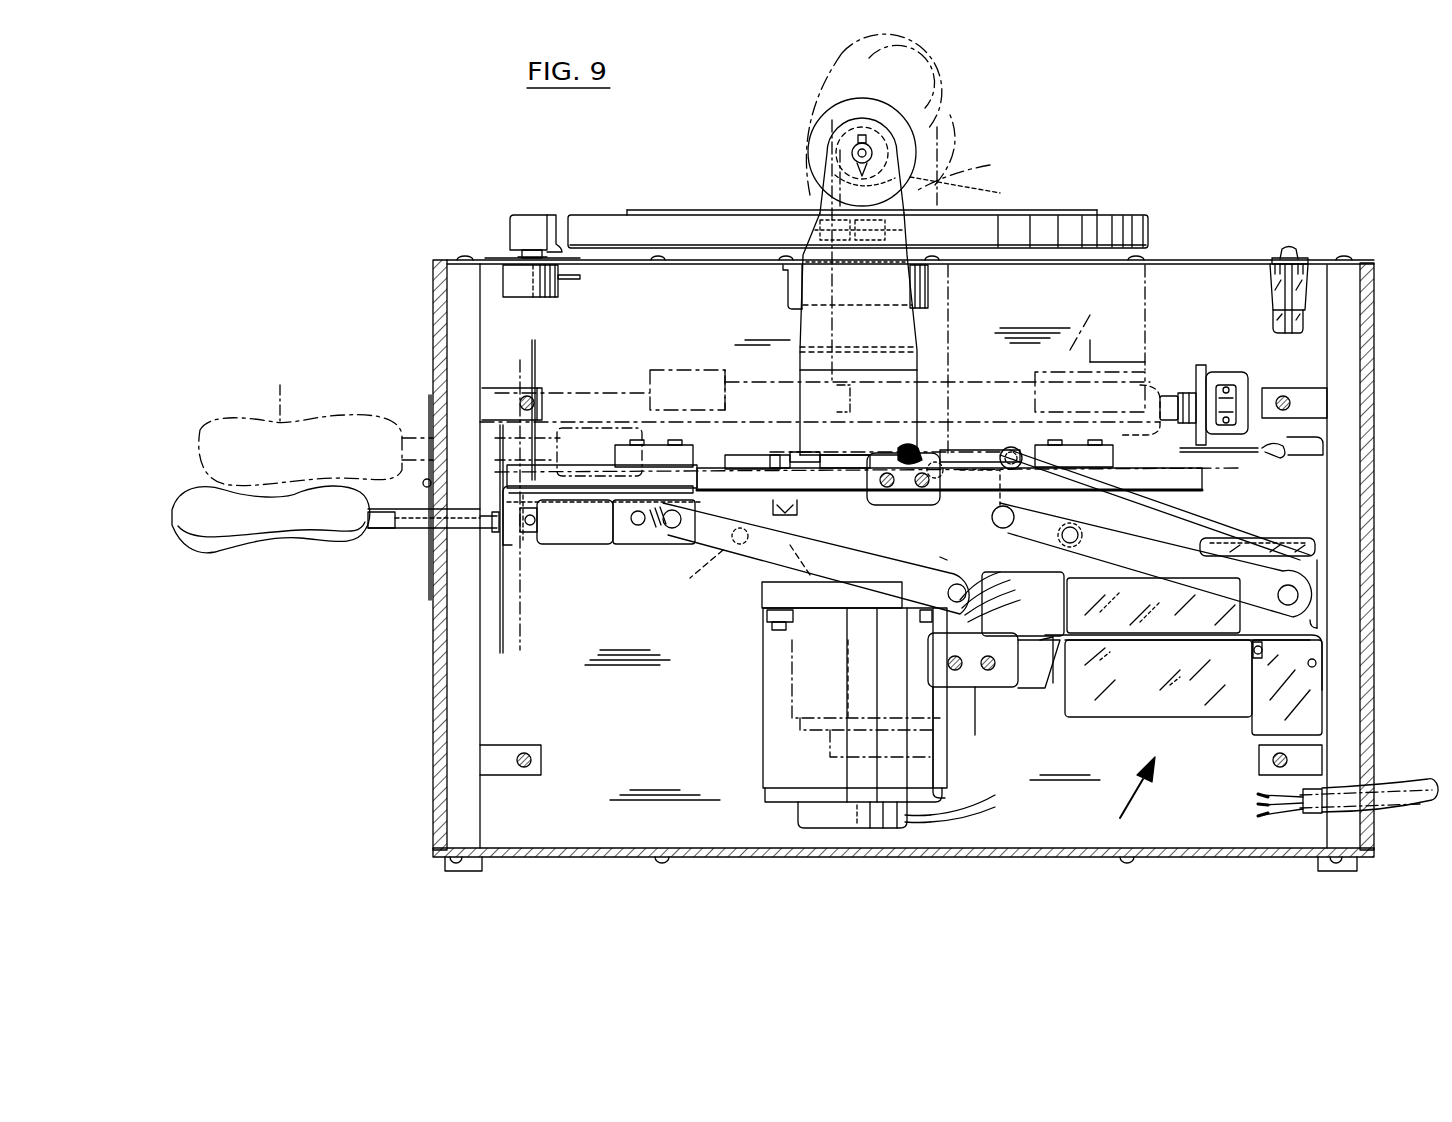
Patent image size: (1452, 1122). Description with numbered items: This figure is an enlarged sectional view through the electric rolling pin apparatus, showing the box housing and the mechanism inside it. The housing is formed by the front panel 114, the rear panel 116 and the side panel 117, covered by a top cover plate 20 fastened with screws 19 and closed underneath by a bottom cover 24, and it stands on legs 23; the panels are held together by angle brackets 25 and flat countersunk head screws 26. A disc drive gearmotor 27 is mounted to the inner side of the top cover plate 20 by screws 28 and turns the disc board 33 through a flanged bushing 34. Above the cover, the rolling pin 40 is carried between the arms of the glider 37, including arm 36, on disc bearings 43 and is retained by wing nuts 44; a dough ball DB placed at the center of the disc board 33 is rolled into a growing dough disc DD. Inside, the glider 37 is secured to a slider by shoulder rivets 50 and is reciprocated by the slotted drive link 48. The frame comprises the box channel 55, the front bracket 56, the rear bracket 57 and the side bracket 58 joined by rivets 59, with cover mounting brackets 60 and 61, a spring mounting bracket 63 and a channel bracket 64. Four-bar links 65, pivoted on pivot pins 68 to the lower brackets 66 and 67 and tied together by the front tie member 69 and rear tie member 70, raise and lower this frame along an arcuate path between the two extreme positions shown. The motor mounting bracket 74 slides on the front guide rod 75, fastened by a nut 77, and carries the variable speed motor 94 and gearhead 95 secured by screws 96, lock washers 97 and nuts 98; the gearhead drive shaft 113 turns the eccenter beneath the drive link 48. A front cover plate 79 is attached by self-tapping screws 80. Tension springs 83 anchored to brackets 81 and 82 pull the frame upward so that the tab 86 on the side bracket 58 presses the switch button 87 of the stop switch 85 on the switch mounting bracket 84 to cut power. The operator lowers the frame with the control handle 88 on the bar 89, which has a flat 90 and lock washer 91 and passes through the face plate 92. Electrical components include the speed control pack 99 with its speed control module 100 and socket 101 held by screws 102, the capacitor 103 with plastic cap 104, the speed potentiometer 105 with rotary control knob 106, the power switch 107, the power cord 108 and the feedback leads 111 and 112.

The screws 19 is at (464, 259).
The top cover plate 20 is at (1185, 261).
The legs 23 is at (445, 865).
The bottom cover 24 is at (1195, 850).
The angle brackets 25 is at (500, 395).
The flat countersunk head screws 26 is at (830, 245).
The disc drive gearmotor 27 is at (786, 300).
The screws 28 is at (780, 265).
The disc board 33 is at (1150, 230).
The flanged bushing 34 is at (969, 189).
The arm of glider 36 is at (855, 122).
The glider 37 is at (770, 458).
The rolling pin 40 is at (928, 122).
The disc bearings 43 is at (840, 168).
The wing nuts 44 is at (857, 141).
The drive link 48 is at (805, 468).
The shoulder rivets 50 is at (852, 412).
The box channel 55 is at (535, 405).
The front bracket 56 is at (655, 385).
The rear bracket 57 is at (1145, 528).
The side bracket 58 is at (985, 385).
The rivets 59 is at (640, 445).
The cover mounting bracket 60 is at (532, 520).
The cover mounting bracket 61 is at (570, 490).
The spring mounting bracket 63 is at (1010, 468).
The channel bracket 64 is at (1000, 478).
The four-bar links 65 is at (758, 572).
The lower bracket 66 is at (990, 690).
The lower bracket 67 is at (1038, 680).
The pivot pins 68 is at (731, 535).
The front tie member 69 is at (700, 572).
The rear tie member 70 is at (1023, 604).
The motor mounting bracket 74 is at (578, 545).
The front guide rod 75 is at (630, 517).
The nut 77 is at (935, 535).
The front cover plate 79 is at (505, 638).
The self-tapping screws 80 is at (498, 540).
The bracket 81 is at (1315, 454).
The bracket 82 is at (920, 470).
The tension springs 83 is at (658, 530).
The switch mounting bracket 84 is at (1200, 370).
The push button stop switch 85 is at (1210, 392).
The tab 86 is at (1130, 428).
The switch button 87 is at (1168, 394).
The control handle 88 is at (280, 418).
The bar 89 is at (408, 432).
The flat 90 is at (380, 530).
The lock washer 91 is at (527, 545).
The face plate 92 is at (430, 592).
The variable speed motor 94 is at (762, 690).
The gearhead 95 is at (762, 595).
The screws 96 is at (805, 542).
The lock washers 97 is at (920, 616).
The nuts 98 is at (925, 623).
The speed control pack 99 is at (1121, 787).
The electronic speed control module 100 is at (1088, 717).
The socket 101 is at (1300, 690).
The screws 102 is at (1253, 655).
The capacitor 103 is at (1316, 553).
The plastic cap 104 is at (1200, 542).
The speed potentiometer 105 is at (515, 290).
The rotary control knob 106 is at (528, 222).
The ON/OFF power switch 107 is at (1291, 248).
The power cord 108 is at (1400, 788).
The lead 111 is at (973, 800).
The lead 112 is at (973, 812).
The drive shaft 113 is at (805, 515).
The front panel 114 is at (440, 764).
The rear panel 116 is at (1350, 628).
The side panel 117 is at (488, 690).
The dough ball DB is at (971, 169).
The dough disc DD is at (1085, 214).